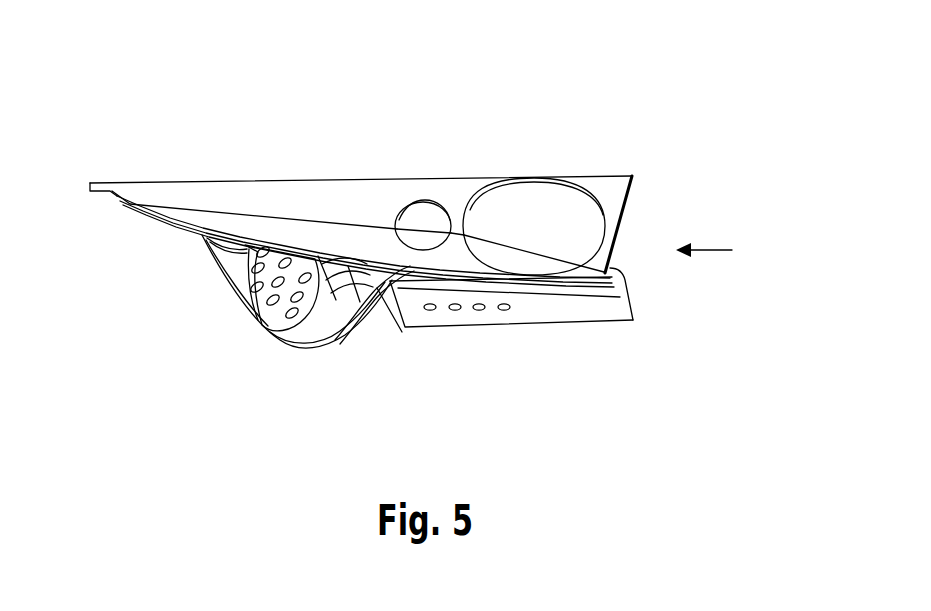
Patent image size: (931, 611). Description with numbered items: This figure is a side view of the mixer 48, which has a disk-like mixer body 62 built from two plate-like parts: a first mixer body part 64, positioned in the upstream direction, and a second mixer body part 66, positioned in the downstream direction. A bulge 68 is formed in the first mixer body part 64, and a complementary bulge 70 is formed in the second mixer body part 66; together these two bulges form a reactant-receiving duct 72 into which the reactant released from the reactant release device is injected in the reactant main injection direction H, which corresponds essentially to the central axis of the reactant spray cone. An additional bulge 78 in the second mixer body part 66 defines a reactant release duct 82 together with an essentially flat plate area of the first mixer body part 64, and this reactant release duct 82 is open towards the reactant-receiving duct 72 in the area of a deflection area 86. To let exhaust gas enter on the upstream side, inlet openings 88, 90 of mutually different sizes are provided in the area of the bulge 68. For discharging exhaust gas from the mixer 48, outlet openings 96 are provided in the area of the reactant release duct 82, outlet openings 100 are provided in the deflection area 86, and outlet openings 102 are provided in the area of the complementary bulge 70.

The mixer 48 is at (686, 99).
The mixer body 62 is at (244, 170).
The first mixer body part 64 is at (414, 176).
The second mixer body part 66 is at (398, 332).
The bulge 68 is at (612, 173).
The complementary bulge 70 is at (570, 324).
The reactant-receiving duct 72 is at (653, 212).
The additional bulge 78 is at (334, 349).
The reactant release duct 82 is at (360, 256).
The deflection area 86 is at (293, 283).
The inlet opening 88 is at (425, 224).
The inlet opening 90 is at (540, 207).
The outlet openings 96 is at (310, 352).
The outlet openings 100 is at (255, 272).
The outlet openings 102 is at (506, 312).
The reactant main injection direction H is at (712, 250).